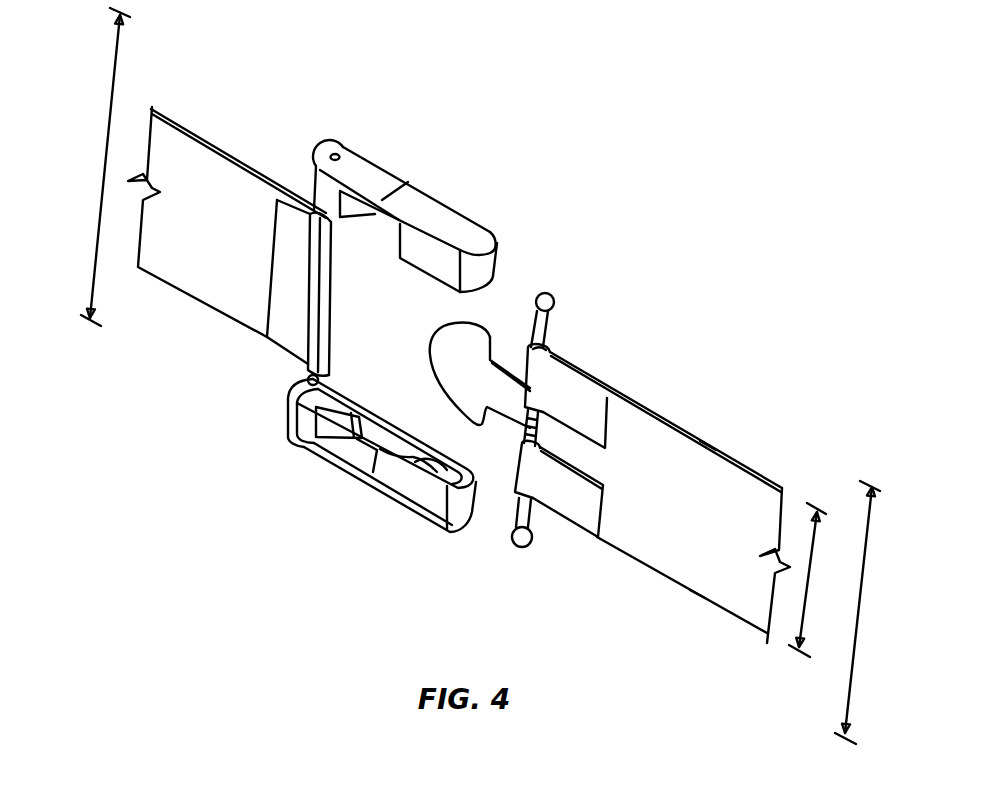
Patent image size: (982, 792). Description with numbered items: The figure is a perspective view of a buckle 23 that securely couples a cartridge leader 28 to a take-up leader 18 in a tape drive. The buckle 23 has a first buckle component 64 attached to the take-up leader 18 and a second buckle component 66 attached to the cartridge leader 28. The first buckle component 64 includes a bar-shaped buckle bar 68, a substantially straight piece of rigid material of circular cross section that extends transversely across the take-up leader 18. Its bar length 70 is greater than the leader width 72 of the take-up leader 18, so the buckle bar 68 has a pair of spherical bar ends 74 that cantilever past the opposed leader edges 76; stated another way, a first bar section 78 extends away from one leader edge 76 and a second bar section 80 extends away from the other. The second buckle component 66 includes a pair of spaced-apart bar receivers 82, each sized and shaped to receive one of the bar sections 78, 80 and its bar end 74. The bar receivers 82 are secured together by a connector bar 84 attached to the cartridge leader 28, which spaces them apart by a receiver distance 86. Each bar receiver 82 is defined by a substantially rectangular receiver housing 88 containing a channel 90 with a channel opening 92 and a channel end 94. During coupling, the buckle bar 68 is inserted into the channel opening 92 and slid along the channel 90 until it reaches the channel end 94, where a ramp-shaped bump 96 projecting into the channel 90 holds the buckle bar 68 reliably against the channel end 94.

The take-up leader 18 is at (760, 463).
The buckle 23 is at (462, 132).
The cartridge leader 28 is at (170, 117).
The first buckle component 64 is at (520, 437).
The second buckle component 66 is at (380, 155).
The buckle bar 68 is at (557, 327).
The bar length 70 is at (848, 717).
The leader width 72 is at (809, 580).
The bar ends 74 is at (547, 291).
The leader edges 76 is at (713, 443).
The first bar section 78 is at (530, 328).
The second bar section 80 is at (515, 520).
The bar receivers 82 is at (445, 220).
The connector bar 84 is at (305, 380).
The receiver distance 86 is at (82, 260).
The receiver housing 88 is at (300, 420).
The channel 90 is at (403, 447).
The channel opening 92 is at (333, 450).
The channel end 94 is at (450, 483).
The bump 96 is at (437, 480).